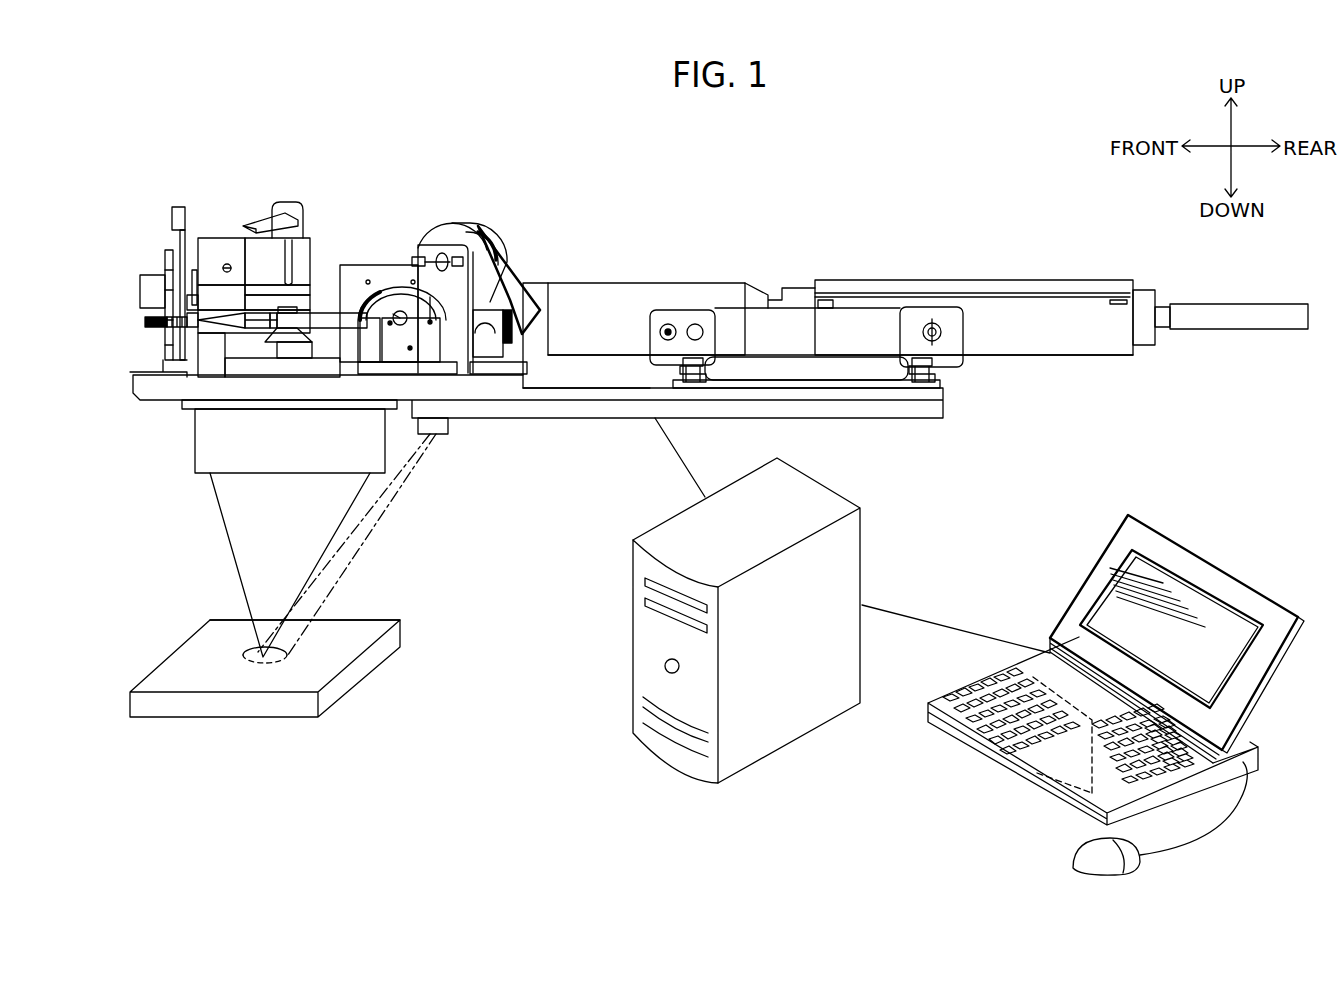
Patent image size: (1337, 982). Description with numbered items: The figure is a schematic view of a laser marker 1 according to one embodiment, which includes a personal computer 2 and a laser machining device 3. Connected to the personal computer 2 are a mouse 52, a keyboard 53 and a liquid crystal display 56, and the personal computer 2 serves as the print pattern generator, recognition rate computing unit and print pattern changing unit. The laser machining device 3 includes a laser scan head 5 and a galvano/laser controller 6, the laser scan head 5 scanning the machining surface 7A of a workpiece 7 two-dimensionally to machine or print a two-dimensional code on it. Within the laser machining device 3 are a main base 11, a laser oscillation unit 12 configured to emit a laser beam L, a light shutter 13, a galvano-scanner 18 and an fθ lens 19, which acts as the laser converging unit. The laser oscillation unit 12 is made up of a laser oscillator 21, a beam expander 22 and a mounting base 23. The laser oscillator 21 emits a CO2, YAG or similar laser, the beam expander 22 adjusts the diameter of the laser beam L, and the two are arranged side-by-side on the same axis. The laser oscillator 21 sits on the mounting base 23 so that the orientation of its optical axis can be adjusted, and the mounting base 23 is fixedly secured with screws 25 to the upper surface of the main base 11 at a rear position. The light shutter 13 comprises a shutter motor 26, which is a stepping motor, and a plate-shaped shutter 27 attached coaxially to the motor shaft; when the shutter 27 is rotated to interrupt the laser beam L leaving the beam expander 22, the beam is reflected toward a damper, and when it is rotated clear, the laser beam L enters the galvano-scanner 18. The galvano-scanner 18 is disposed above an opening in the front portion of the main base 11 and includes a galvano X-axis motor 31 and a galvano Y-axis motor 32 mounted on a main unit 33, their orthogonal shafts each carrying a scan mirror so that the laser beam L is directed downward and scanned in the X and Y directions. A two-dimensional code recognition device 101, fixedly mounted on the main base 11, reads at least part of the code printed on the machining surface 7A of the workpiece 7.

The laser marker 1 is at (857, 169).
The personal computer 2 is at (1234, 543).
The laser machining device 3 is at (975, 225).
The laser scan head 5 is at (697, 228).
The galvano/laser controller 6 is at (862, 565).
The workpiece 7 is at (357, 673).
The machining surface 7A is at (366, 632).
The main base 11 is at (582, 410).
The laser oscillation unit 12 is at (882, 267).
The light shutter 13 is at (440, 228).
The galvano-scanner 18 is at (231, 229).
The fθ lens 19 is at (218, 451).
The laser oscillator 21 is at (1063, 287).
The beam expander 22 is at (620, 295).
The mounting base 23 is at (865, 375).
The screws 25 is at (692, 383).
The shutter motor 26 is at (483, 237).
The shutter 27 is at (510, 287).
The galvano X-axis motor 31 is at (282, 202).
The galvano Y-axis motor 32 is at (148, 292).
The main unit 33 is at (205, 247).
The mouse 52 is at (1088, 848).
The keyboard 53 is at (968, 715).
The liquid crystal display 56 is at (1147, 578).
The two-dimensional code recognition device 101 is at (437, 437).
The laser beam L is at (248, 542).